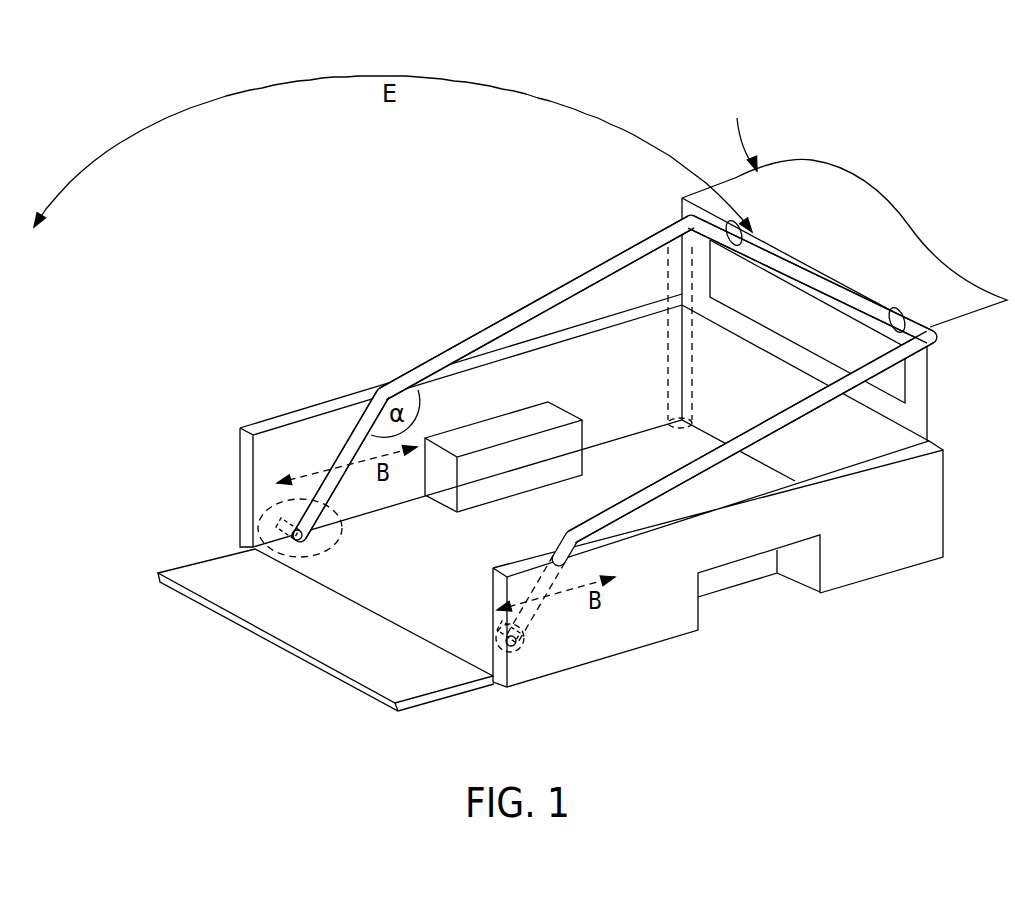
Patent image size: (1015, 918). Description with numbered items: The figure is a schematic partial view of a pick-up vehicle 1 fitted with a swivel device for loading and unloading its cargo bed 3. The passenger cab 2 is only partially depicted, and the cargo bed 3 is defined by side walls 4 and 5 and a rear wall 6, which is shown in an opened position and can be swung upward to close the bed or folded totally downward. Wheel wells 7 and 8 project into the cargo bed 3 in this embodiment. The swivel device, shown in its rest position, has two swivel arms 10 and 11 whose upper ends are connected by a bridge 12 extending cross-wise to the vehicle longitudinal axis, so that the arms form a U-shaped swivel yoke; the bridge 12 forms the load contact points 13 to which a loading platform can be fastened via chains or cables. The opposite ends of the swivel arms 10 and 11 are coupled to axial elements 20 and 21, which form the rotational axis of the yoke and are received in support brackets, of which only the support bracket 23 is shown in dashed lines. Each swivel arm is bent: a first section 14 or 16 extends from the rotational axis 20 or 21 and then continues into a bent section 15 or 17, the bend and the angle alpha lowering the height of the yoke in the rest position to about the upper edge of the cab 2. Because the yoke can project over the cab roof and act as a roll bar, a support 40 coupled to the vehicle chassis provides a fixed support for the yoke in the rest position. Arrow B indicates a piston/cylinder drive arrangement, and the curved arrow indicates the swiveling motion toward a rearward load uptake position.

The pick-up vehicle 1 is at (745, 129).
The passenger cab 2 is at (857, 218).
The cargo bed 3 is at (547, 525).
The side wall 4 is at (478, 390).
The side wall 5 is at (868, 567).
The rear wall 6 is at (418, 680).
The wheel well 7 is at (563, 418).
The wheel well 8 is at (737, 578).
The swivel arm 10 is at (393, 380).
The swivel arm 11 is at (757, 428).
The bridge 12 is at (793, 263).
The load contact points 13 is at (735, 245).
The first section 14 is at (367, 420).
The bent section 15 is at (560, 290).
The first section 16 is at (540, 610).
The bent section 17 is at (633, 507).
The axial element 20 is at (312, 545).
The axial element 21 is at (512, 647).
The support bracket 23 is at (262, 530).
The support 40 is at (667, 262).